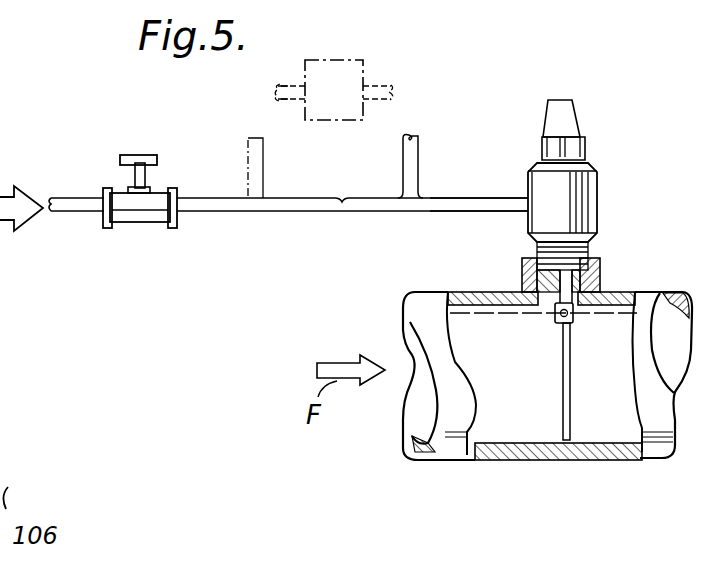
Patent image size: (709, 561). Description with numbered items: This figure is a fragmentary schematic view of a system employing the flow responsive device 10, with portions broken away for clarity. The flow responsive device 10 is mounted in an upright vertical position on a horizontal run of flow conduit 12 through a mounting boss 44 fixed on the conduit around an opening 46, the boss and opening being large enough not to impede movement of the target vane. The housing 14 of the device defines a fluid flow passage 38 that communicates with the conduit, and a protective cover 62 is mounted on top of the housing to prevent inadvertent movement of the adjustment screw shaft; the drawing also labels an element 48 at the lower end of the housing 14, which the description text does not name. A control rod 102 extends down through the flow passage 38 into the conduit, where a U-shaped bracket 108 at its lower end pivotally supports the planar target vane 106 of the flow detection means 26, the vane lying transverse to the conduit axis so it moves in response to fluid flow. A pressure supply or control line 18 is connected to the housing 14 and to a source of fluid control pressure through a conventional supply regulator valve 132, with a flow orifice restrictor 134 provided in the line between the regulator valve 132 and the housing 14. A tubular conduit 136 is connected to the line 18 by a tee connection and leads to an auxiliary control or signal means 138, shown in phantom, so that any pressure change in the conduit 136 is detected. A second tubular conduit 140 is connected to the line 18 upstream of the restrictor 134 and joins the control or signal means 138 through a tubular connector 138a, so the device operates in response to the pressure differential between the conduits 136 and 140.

The flow responsive device 10 is at (551, 185).
The fluid flow conduit 12 is at (629, 459).
The housing means 14 is at (612, 201).
The fluid pressure line 18 is at (478, 168).
The flow detection means 26 is at (553, 366).
The fluid flow passage 38 is at (522, 275).
The annular boss 44 is at (604, 262).
The opening 46 is at (603, 279).
The threaded neck 48 is at (550, 262).
The protective cover 62 is at (560, 106).
The control rod 102 is at (558, 292).
The target vane 106 is at (568, 405).
The U-shaped bracket 108 is at (572, 323).
The supply regulator valve 132 is at (149, 222).
The flow orifice restrictor 134 is at (341, 214).
The tubular conduit 136 is at (413, 151).
The control or signal means 138 is at (370, 73).
The tubular connector 138a is at (278, 87).
The second tubular conduit 140 is at (266, 172).